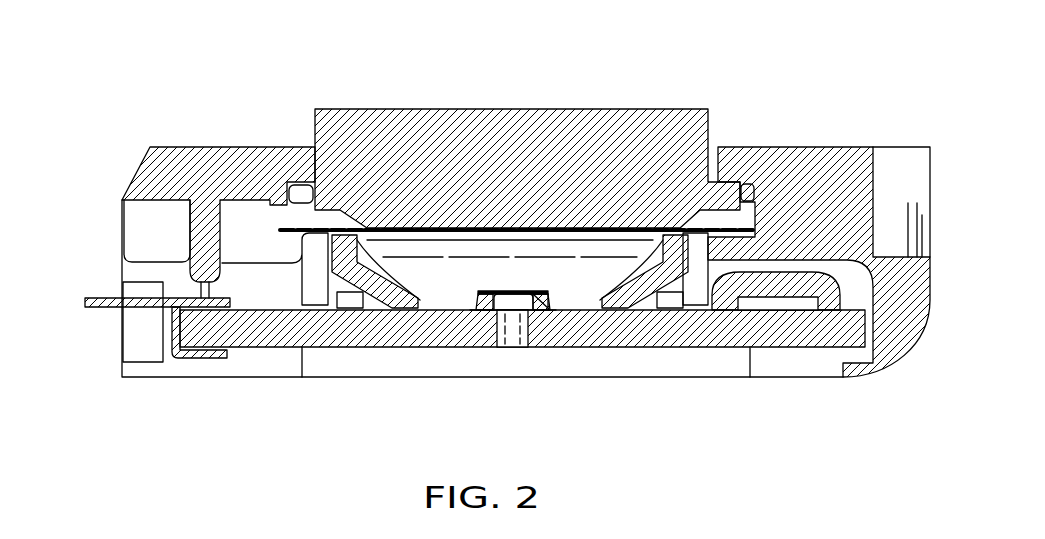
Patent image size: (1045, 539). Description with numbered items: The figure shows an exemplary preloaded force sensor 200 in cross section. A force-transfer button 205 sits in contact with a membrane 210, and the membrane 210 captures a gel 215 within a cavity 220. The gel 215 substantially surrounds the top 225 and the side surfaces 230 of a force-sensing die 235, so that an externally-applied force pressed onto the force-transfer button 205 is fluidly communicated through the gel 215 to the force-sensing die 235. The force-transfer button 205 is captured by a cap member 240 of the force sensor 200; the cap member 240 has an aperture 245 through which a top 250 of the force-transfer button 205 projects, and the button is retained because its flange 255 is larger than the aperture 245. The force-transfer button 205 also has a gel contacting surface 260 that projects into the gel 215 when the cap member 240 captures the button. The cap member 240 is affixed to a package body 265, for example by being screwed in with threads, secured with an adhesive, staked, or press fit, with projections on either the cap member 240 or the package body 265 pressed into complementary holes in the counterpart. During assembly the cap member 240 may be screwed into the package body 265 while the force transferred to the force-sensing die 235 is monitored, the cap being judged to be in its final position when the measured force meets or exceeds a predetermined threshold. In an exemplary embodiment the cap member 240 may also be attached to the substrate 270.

The force sensor 200 is at (120, 138).
The force-transfer button 205 is at (378, 108).
The membrane 210 is at (298, 234).
The gel 215 is at (437, 270).
The cavity 220 is at (597, 325).
The top surface 225 is at (518, 291).
The side surfaces 230 is at (480, 310).
The force-sensing die 235 is at (530, 296).
The cap member 240 is at (218, 167).
The aperture 245 is at (527, 131).
The top 250 is at (527, 121).
The flange 255 is at (293, 193).
The gel contacting surface 260 is at (588, 228).
The package body 265 is at (158, 243).
The substrate 270 is at (775, 333).